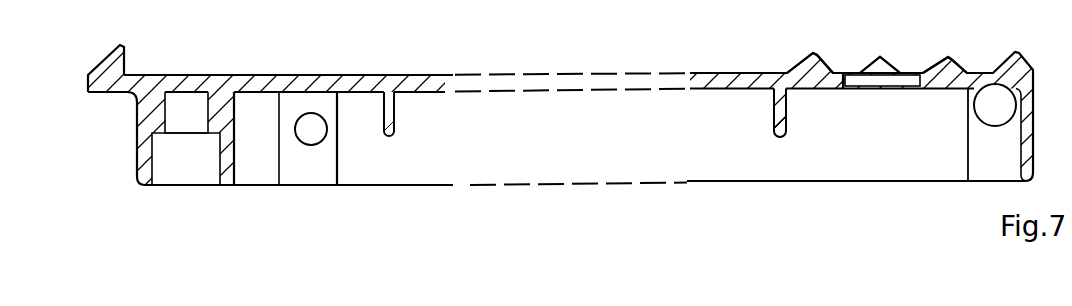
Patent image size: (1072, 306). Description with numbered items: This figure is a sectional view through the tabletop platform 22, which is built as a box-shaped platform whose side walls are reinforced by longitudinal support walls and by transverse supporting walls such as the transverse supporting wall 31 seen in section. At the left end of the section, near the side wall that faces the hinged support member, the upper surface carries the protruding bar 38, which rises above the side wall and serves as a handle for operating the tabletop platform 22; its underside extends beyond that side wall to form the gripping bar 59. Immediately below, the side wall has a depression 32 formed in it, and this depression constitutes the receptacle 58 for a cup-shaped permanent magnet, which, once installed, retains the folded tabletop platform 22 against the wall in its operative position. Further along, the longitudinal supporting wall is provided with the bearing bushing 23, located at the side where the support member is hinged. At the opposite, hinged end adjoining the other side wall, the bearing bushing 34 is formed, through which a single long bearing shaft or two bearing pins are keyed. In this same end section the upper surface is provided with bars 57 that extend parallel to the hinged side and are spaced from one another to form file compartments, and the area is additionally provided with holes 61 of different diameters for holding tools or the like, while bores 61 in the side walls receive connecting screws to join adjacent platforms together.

The tabletop platform 22 is at (366, 84).
The bearing bushing 23 is at (320, 165).
The transverse supporting wall 31 is at (396, 117).
The depression 32 is at (137, 165).
The bearing bushing 34 is at (975, 143).
The protruding bar 38 is at (108, 62).
The bars 57 is at (878, 50).
The receptacle 58 is at (180, 172).
The gripping bar 59 is at (107, 92).
The holes 61 is at (903, 77).